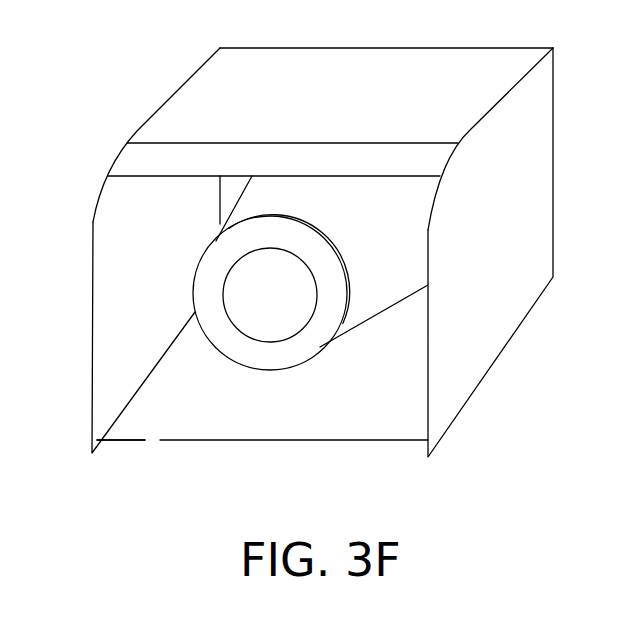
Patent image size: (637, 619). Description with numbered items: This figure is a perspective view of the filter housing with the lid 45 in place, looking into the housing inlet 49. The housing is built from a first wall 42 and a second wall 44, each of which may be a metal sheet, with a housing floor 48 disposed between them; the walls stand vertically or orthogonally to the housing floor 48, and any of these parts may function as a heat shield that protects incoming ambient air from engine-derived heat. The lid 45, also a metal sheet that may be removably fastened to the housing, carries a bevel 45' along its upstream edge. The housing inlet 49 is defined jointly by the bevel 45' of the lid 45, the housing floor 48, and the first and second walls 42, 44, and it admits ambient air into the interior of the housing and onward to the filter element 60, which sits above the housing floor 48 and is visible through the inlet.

The lid 45 is at (323, 139).
The bevel 45' is at (258, 142).
The first wall 42 is at (515, 253).
The second wall 44 is at (152, 320).
The housing floor 48 is at (392, 400).
The filter element 60 is at (234, 352).
The housing inlet 49 is at (156, 430).